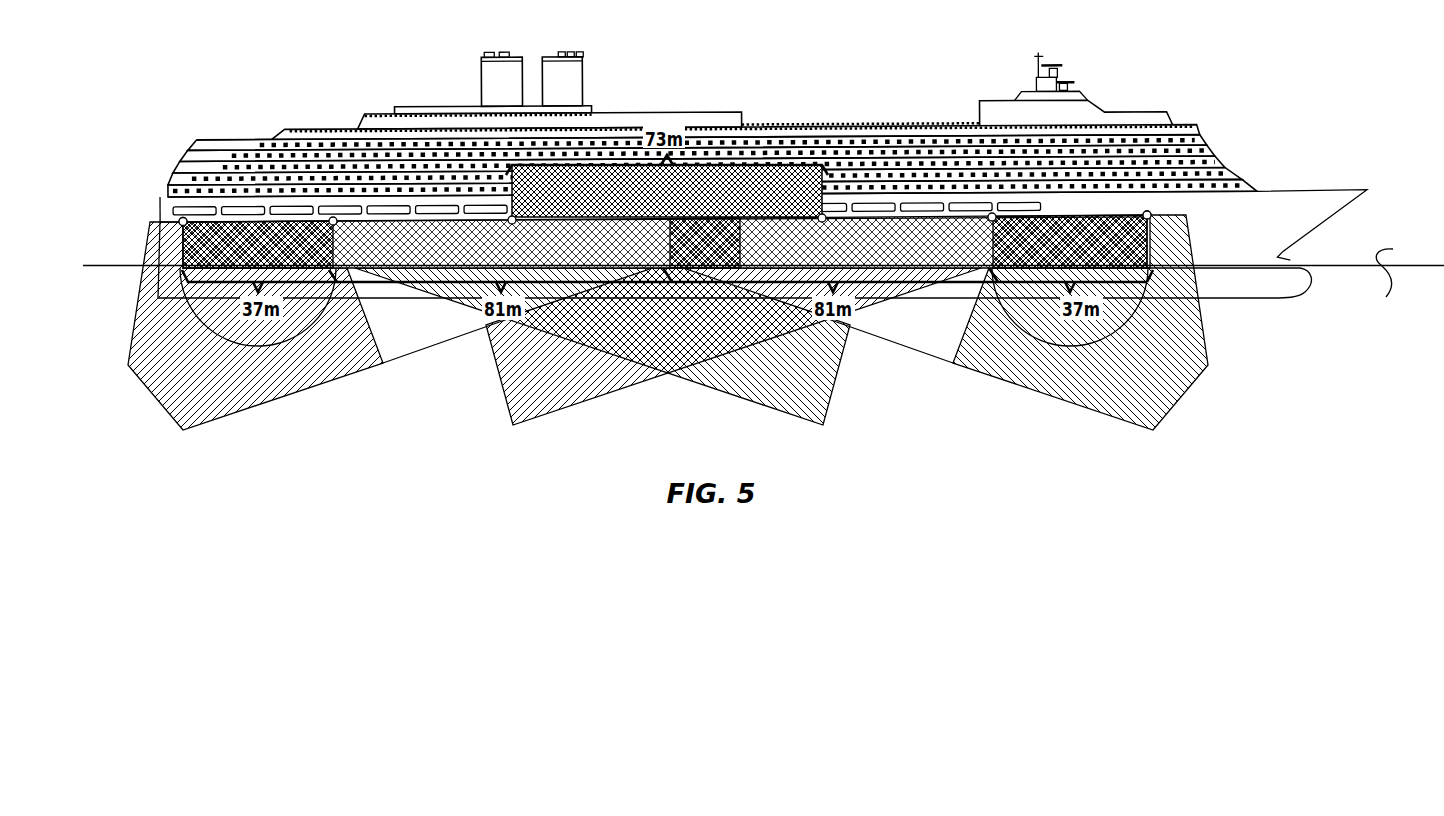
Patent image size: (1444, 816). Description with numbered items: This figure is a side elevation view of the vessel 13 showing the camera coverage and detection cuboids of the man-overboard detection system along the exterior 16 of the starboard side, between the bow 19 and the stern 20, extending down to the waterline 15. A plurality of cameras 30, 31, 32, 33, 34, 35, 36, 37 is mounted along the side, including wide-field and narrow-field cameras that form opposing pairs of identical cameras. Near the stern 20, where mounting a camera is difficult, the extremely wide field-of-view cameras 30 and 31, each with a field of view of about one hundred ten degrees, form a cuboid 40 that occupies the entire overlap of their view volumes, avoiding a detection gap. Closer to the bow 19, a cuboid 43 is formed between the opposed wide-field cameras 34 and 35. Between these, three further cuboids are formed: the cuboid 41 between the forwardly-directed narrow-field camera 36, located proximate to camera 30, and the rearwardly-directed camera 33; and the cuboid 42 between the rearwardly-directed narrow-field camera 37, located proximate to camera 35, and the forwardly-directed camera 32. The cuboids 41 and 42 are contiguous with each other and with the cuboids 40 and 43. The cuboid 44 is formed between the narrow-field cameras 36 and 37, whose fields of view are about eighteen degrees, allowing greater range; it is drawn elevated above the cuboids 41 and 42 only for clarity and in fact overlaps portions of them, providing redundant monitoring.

The vessel 13 is at (1220, 160).
The waterline 15 is at (763, 283).
The exterior of the starboard side 16 is at (1250, 247).
The bow 19 is at (1358, 194).
The stern 20 is at (157, 203).
The camera 30 is at (183, 221).
The camera 31 is at (333, 221).
The camera 32 is at (512, 220).
The camera 33 is at (822, 218).
The camera 34 is at (992, 217).
The camera 35 is at (1147, 215).
The narrow-field camera 36 is at (183, 221).
The narrow-field camera 37 is at (1148, 215).
The cuboid 40 is at (303, 270).
The cuboid 41 is at (463, 273).
The cuboid 42 is at (932, 272).
The cuboid 43 is at (1112, 288).
The cuboid 44 is at (725, 221).